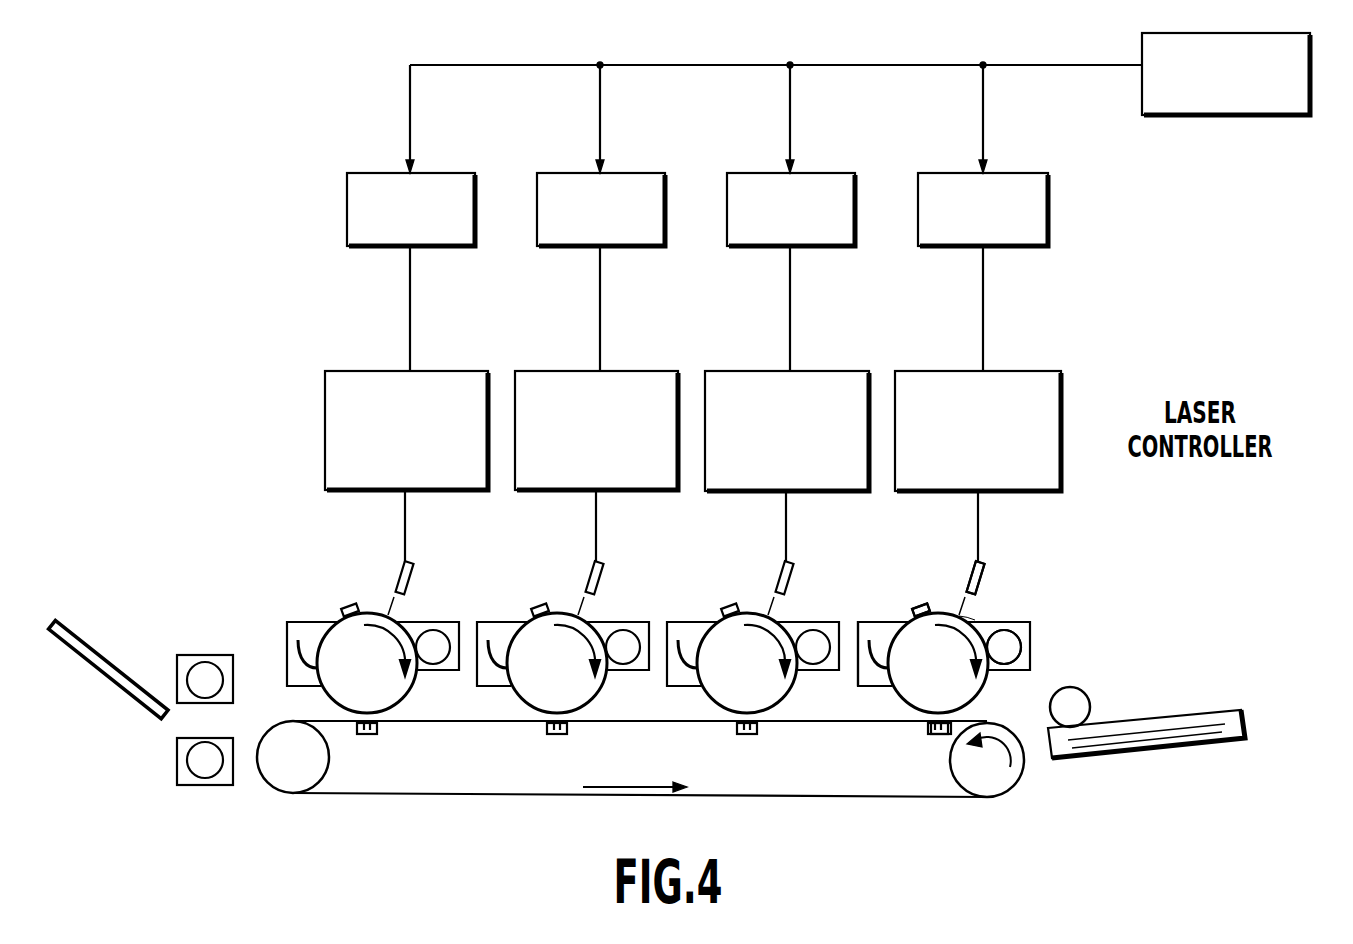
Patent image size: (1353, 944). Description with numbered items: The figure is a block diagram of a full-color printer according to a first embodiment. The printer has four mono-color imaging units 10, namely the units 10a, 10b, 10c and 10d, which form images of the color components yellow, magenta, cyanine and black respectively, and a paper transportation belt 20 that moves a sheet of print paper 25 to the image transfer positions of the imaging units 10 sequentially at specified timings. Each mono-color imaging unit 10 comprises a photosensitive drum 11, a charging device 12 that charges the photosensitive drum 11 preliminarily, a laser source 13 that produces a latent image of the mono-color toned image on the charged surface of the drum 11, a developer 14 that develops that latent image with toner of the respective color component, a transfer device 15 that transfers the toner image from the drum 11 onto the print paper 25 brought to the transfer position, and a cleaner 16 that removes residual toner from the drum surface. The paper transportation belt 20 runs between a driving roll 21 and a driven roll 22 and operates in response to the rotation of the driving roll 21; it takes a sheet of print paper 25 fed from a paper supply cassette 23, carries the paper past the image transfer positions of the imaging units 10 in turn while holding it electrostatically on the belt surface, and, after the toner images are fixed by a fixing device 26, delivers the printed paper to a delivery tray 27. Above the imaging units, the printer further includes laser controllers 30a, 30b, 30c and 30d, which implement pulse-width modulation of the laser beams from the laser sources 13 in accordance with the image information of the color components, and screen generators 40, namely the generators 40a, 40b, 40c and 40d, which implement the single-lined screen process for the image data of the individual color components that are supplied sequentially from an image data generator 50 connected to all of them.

The image data generator 50 is at (1205, 116).
The screen generators 40 is at (681, 180).
The screen generator 40a is at (943, 175).
The screen generator 40b is at (753, 175).
The screen generator 40c is at (556, 173).
The screen generator 40d is at (358, 173).
The laser controller 30a is at (934, 373).
The laser controller 30b is at (752, 373).
The laser controller 30c is at (557, 371).
The laser controller 30d is at (355, 371).
The mono-color imaging units 10 is at (711, 626).
The mono-color imaging unit 10a is at (941, 597).
The mono-color imaging unit 10b is at (745, 598).
The mono-color imaging unit 10c is at (558, 590).
The mono-color imaging unit 10d is at (368, 590).
The photosensitive drum 11 is at (968, 620).
The charging device 12 is at (913, 615).
The laser source 13 is at (980, 566).
The developer 14 is at (1034, 642).
The transfer device 15 is at (932, 730).
The cleaner 16 is at (858, 625).
The paper transportation belt 20 is at (645, 798).
The driving roll 21 is at (993, 790).
The driven roll 22 is at (285, 785).
The paper supply cassette 23 is at (1168, 744).
The print paper 25 is at (1172, 716).
The fixing device 26 is at (197, 655).
The delivery tray 27 is at (100, 675).